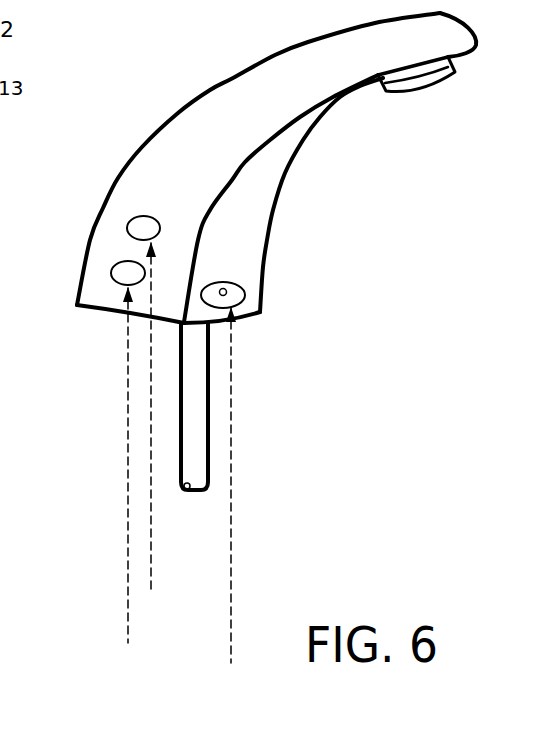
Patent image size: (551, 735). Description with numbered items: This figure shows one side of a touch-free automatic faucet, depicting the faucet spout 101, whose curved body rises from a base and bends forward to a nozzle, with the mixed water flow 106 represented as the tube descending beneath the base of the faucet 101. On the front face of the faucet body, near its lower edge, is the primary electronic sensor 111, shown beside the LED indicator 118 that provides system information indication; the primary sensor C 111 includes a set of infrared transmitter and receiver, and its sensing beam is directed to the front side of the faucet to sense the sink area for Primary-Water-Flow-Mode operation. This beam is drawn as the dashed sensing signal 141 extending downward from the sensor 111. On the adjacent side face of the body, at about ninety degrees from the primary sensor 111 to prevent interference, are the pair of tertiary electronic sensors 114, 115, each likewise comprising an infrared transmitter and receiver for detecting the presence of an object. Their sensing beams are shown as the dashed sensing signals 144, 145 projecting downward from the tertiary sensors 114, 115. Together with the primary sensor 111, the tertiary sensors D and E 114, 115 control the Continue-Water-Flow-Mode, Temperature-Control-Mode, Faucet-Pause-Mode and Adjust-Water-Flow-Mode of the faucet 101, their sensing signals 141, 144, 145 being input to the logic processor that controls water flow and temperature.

The faucet spout 101 is at (221, 82).
The mixed water flow 106 is at (213, 410).
The primary electronic sensor 111 is at (248, 306).
The tertiary electronic sensor 114 is at (126, 220).
The tertiary electronic sensor 115 is at (112, 268).
The LED indicator 118 is at (233, 281).
The sensing signal 141 is at (232, 483).
The sensing signal 144 is at (151, 517).
The sensing signal 145 is at (130, 558).